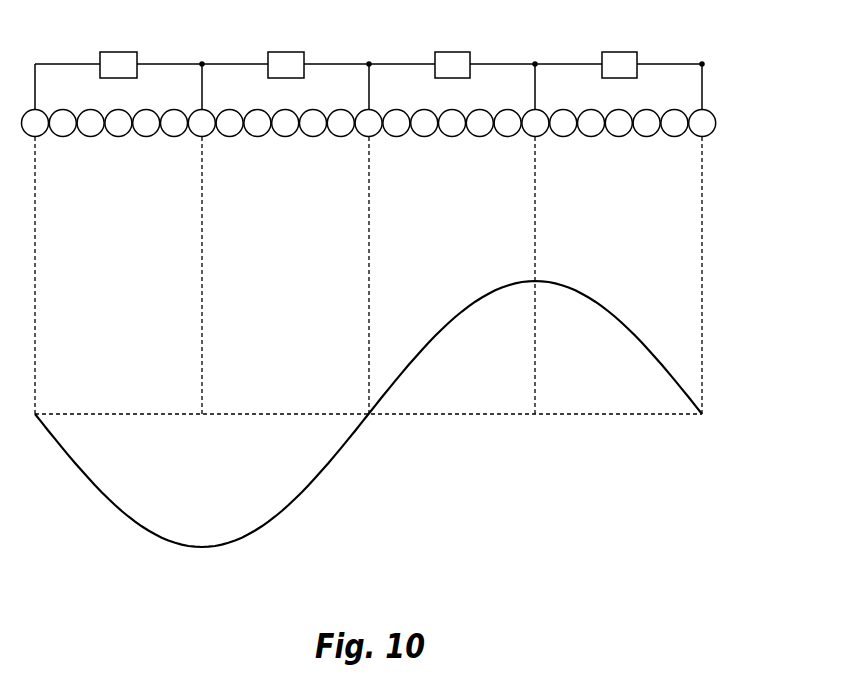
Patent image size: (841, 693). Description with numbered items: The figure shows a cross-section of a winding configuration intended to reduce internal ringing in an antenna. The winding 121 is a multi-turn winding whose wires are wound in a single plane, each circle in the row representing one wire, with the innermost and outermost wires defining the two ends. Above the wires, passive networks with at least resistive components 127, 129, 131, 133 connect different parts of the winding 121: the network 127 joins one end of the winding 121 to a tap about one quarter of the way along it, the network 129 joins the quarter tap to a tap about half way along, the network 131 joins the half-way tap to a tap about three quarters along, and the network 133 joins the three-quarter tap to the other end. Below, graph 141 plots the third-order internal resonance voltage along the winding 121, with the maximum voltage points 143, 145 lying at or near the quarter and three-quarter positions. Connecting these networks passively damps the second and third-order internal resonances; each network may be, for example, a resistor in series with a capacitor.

The winding 121 is at (724, 119).
The passive network with at least a resistive component 127 is at (121, 62).
The passive network with at least a resistive component 129 is at (288, 62).
The passive network with at least a resistive component 131 is at (455, 62).
The passive network with at least a resistive component 133 is at (622, 62).
The graph 141 is at (677, 378).
The maximum voltage point 143 is at (535, 280).
The maximum voltage point 145 is at (202, 549).